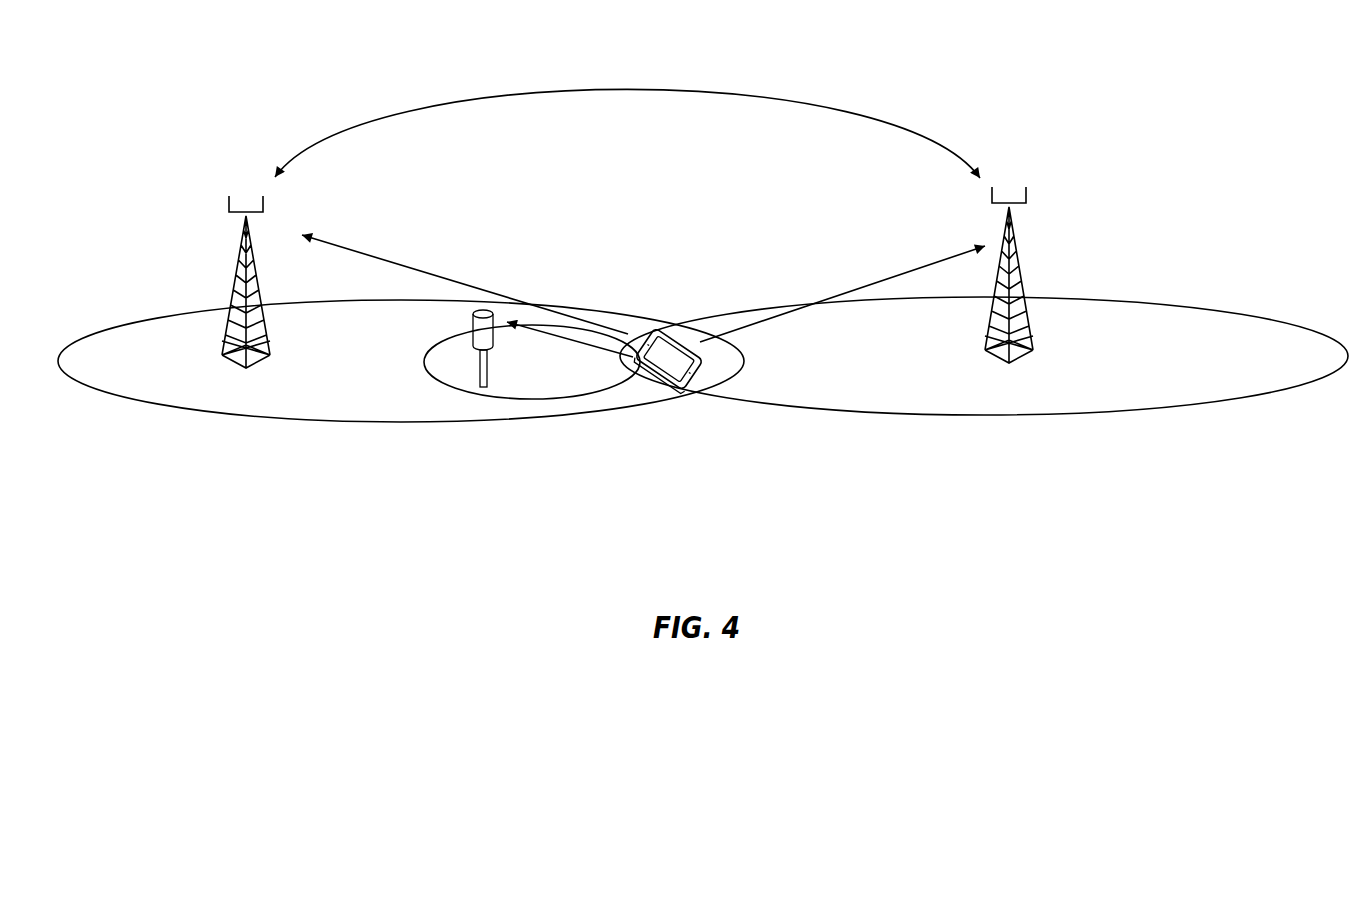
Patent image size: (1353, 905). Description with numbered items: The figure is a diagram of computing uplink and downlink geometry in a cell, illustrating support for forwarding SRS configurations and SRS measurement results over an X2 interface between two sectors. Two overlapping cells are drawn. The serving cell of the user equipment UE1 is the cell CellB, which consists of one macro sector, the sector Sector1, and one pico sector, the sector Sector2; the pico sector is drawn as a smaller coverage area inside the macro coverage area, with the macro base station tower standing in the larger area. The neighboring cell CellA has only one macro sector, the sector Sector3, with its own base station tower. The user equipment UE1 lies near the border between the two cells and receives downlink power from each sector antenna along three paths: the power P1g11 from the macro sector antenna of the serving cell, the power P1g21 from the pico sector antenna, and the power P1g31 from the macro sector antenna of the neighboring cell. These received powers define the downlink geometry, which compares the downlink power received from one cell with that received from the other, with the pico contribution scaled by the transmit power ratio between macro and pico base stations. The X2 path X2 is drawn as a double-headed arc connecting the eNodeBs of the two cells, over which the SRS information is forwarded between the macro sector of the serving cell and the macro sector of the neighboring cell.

The sector 1 Sector1 is at (172, 408).
The sector 2 Sector2 is at (592, 396).
The sector 3 Sector3 is at (1175, 410).
The cell B CellB is at (262, 386).
The cell A CellA is at (1019, 478).
The element UE1 is at (650, 338).
The X2 interface X2 is at (627, 110).
The received power P1g11 is at (465, 281).
The received power P1g31 is at (842, 282).
The received power P1g21 is at (570, 360).